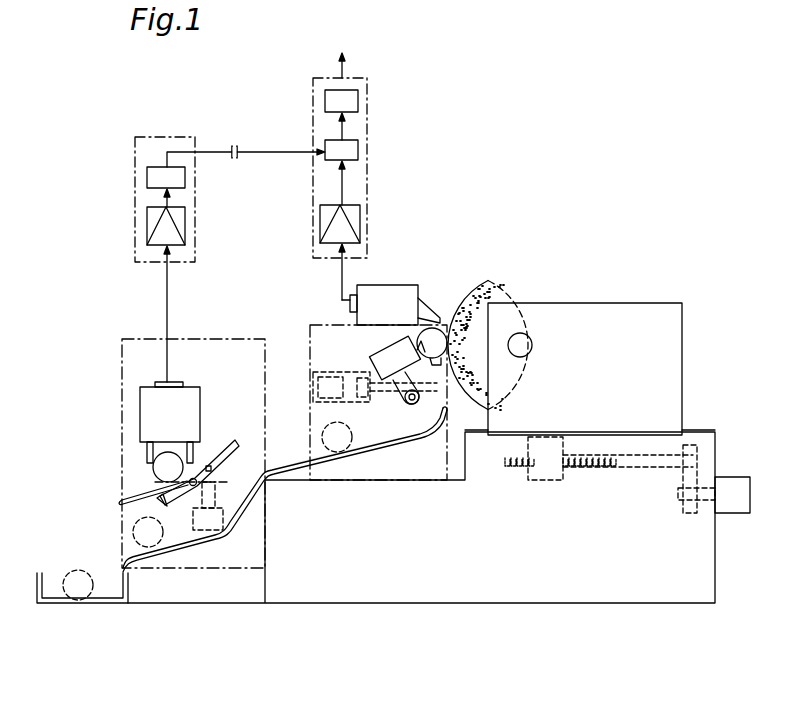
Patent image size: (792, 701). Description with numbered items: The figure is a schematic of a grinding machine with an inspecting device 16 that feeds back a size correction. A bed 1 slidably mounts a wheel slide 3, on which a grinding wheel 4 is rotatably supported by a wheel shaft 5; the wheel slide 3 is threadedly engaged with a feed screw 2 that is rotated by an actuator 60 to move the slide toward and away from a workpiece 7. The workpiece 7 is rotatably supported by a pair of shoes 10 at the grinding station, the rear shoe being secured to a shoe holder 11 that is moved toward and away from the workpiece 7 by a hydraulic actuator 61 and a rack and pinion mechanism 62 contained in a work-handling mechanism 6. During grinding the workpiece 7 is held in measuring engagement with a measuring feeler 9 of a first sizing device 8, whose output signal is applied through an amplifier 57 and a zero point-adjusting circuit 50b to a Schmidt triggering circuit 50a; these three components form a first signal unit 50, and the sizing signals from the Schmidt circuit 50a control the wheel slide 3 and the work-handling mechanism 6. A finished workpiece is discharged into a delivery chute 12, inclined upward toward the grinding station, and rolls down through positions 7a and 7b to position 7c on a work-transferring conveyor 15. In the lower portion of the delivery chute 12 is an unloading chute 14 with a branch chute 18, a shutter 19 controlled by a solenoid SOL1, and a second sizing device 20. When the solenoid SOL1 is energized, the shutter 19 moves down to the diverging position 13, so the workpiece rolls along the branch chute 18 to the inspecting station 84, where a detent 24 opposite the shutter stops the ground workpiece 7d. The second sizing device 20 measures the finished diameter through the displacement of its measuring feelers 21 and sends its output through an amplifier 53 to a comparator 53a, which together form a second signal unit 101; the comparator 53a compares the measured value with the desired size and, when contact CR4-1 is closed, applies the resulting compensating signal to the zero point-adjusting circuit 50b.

The bed 1 is at (532, 595).
The feed screw 2 is at (615, 462).
The wheel slide 3 is at (663, 313).
The grinding wheel 4 is at (553, 297).
The wheel shaft 5 is at (523, 350).
The work-handling mechanism 6 is at (377, 380).
The workpiece 7 is at (440, 340).
The workpiece position 7a is at (340, 452).
The workpiece position 7b is at (147, 541).
The workpiece position 7c is at (80, 592).
The ground workpiece 7d is at (150, 476).
The first sizing device 8 is at (380, 305).
The measuring feeler 9 is at (423, 307).
The shoes 10 is at (440, 362).
The shoe holder 11 is at (383, 360).
The delivery chute 12 is at (390, 448).
The diverging position 13 is at (277, 477).
The unloading chute 14 is at (192, 593).
The work-transferring conveyor 15 is at (47, 605).
The inspecting device 16 is at (193, 424).
The branch chute 18 is at (126, 500).
The shutter 19 is at (238, 441).
The second sizing device 20 is at (170, 412).
The measuring feelers 21 is at (143, 450).
The detent 24 is at (163, 515).
The first signal unit 50 is at (354, 137).
The Schmidt triggering circuit 50a is at (341, 101).
The zero point-adjusting circuit 50b is at (341, 137).
The amplifier 53 is at (147, 227).
The comparator 53a is at (236, 168).
The amplifier 57 is at (320, 227).
The actuator 60 is at (733, 488).
The hydraulic actuator 61 is at (330, 404).
The rack and pinion mechanism 62 is at (390, 414).
The inspecting station 84 is at (203, 444).
The second signal unit 101 is at (168, 182).
The solenoid SOL1 is at (222, 532).
The contact CR4-1 is at (237, 142).